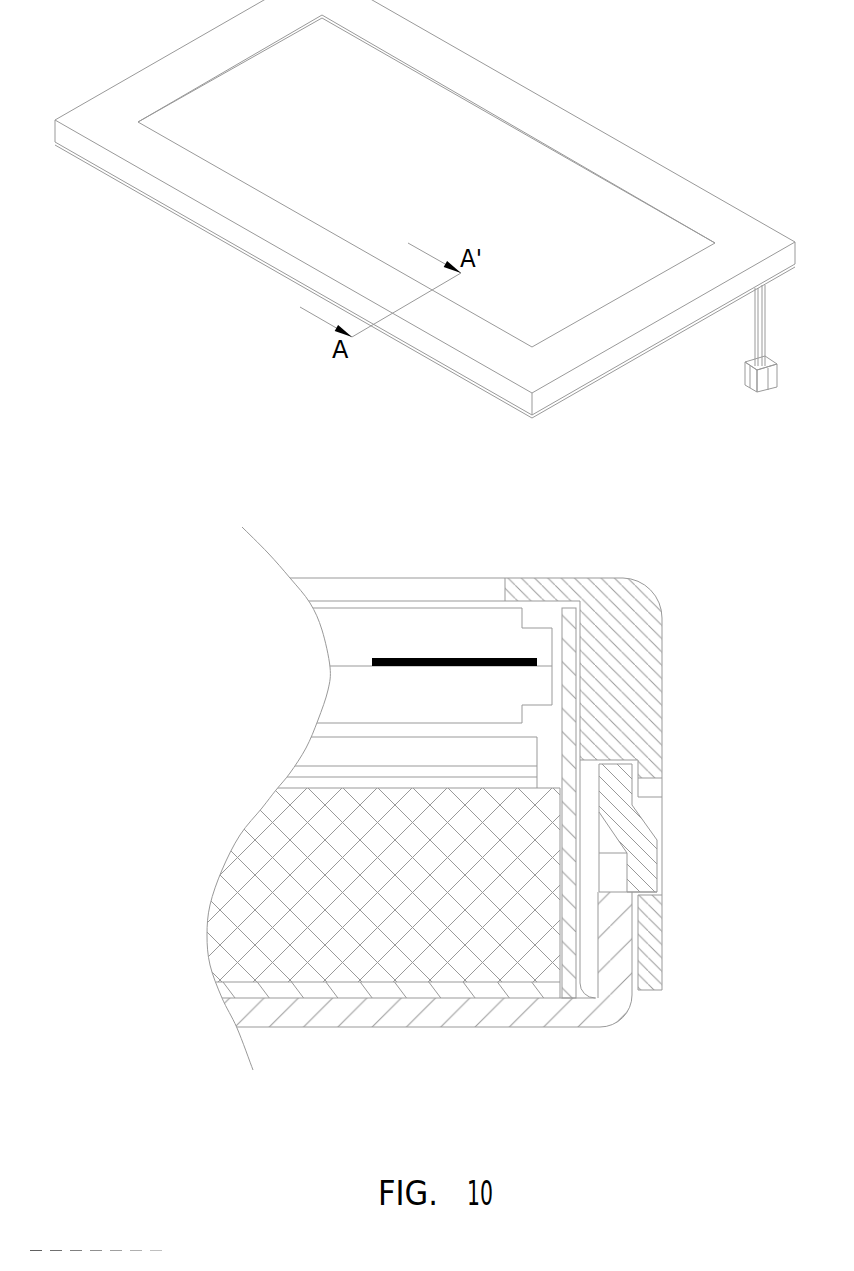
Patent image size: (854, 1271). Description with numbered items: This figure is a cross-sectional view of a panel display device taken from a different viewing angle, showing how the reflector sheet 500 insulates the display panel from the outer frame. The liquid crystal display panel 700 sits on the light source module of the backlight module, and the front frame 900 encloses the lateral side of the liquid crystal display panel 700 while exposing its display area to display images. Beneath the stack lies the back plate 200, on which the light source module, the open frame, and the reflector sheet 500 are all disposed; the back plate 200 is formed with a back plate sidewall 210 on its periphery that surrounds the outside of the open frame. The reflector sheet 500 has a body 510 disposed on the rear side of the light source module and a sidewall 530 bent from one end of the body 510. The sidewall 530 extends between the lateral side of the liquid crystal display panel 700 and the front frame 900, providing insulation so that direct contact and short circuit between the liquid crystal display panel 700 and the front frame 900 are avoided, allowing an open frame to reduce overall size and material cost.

The back plate 200 is at (325, 1016).
The back plate sidewall 210 is at (622, 932).
The reflector sheet 500 is at (386, 877).
The body 510 is at (438, 992).
The sidewall 530 is at (567, 990).
The liquid crystal display panel 700 is at (417, 623).
The front frame 900 is at (645, 613).